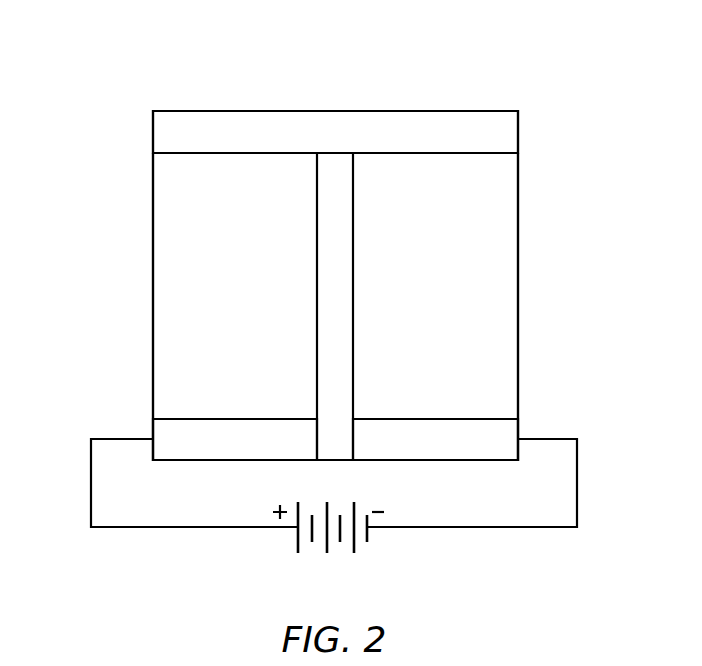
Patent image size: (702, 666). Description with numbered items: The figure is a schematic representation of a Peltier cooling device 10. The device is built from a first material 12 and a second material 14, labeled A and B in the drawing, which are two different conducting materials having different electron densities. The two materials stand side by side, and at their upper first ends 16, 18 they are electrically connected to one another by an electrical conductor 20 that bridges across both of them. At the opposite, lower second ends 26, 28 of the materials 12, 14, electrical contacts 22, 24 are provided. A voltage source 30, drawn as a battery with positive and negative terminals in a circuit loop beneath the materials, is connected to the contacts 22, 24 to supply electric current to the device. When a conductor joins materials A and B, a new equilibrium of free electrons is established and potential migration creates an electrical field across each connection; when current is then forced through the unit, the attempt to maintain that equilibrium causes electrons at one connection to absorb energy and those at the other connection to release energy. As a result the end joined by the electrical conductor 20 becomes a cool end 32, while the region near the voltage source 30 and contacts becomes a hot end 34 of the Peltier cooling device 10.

The Peltier cooling device 10 is at (556, 139).
The first material 12 is at (172, 310).
The second material 14 is at (500, 313).
The first end 16 is at (215, 152).
The first end 18 is at (430, 152).
The electrical conductor 20 is at (347, 126).
The electrical contact 22 is at (191, 448).
The electrical contact 24 is at (481, 448).
The second end 26 is at (228, 419).
The second end 28 is at (435, 419).
The voltage source 30 is at (334, 552).
The cool end 32 is at (290, 93).
The hot end 34 is at (402, 500).